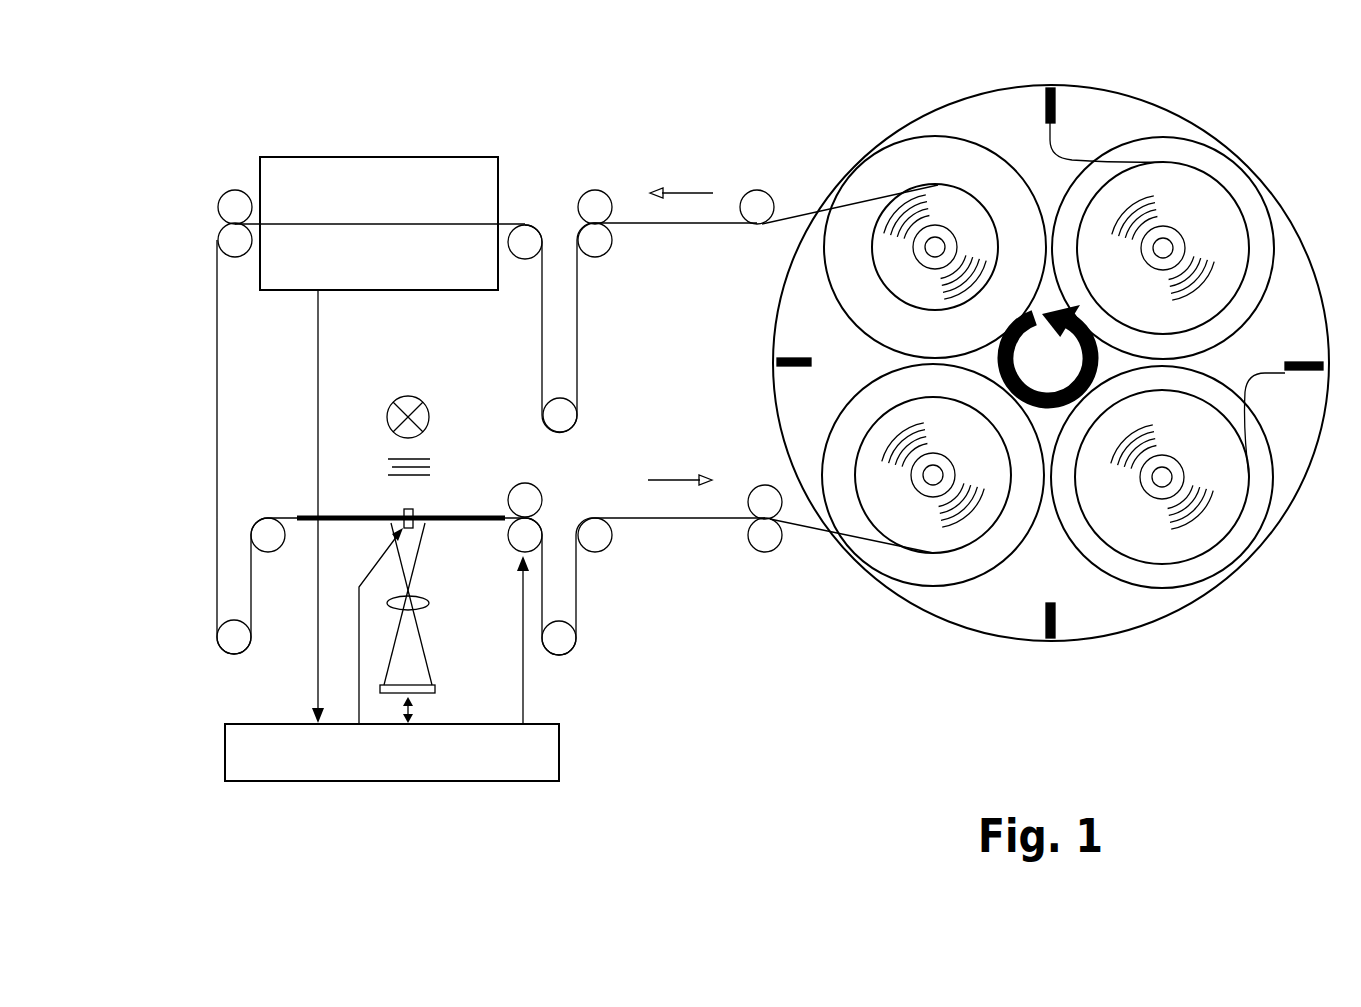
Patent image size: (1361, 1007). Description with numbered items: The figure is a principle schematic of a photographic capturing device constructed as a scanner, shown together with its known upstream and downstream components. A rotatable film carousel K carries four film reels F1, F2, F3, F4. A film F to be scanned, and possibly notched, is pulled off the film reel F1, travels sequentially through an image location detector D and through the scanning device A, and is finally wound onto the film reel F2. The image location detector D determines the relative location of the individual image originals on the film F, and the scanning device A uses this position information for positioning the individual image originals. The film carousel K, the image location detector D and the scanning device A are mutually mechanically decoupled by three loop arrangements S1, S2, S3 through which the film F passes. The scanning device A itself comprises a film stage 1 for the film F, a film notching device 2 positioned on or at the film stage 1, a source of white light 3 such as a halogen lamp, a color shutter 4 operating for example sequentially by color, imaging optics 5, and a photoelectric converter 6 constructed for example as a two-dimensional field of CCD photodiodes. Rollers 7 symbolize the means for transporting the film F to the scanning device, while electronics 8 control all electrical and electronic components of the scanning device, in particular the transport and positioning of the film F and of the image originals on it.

The film stage 1 is at (340, 515).
The film notching device 2 is at (412, 512).
The source of white light 3 is at (418, 398).
The color shutter 4 is at (392, 465).
The imaging optics 5 is at (418, 602).
The photoelectric converter 6 is at (427, 688).
The rollers 7 is at (525, 537).
The electronics 8 is at (534, 754).
The image location detector D is at (358, 155).
The film carousel K is at (892, 110).
The film F is at (217, 385).
The loop arrangement S1 is at (563, 342).
The loop arrangement S2 is at (228, 586).
The loop arrangement S3 is at (565, 593).
The film reel F1 is at (897, 258).
The film reel F2 is at (897, 501).
The film reel F3 is at (1157, 535).
The film reel F4 is at (1183, 200).
The scanning device A is at (340, 808).